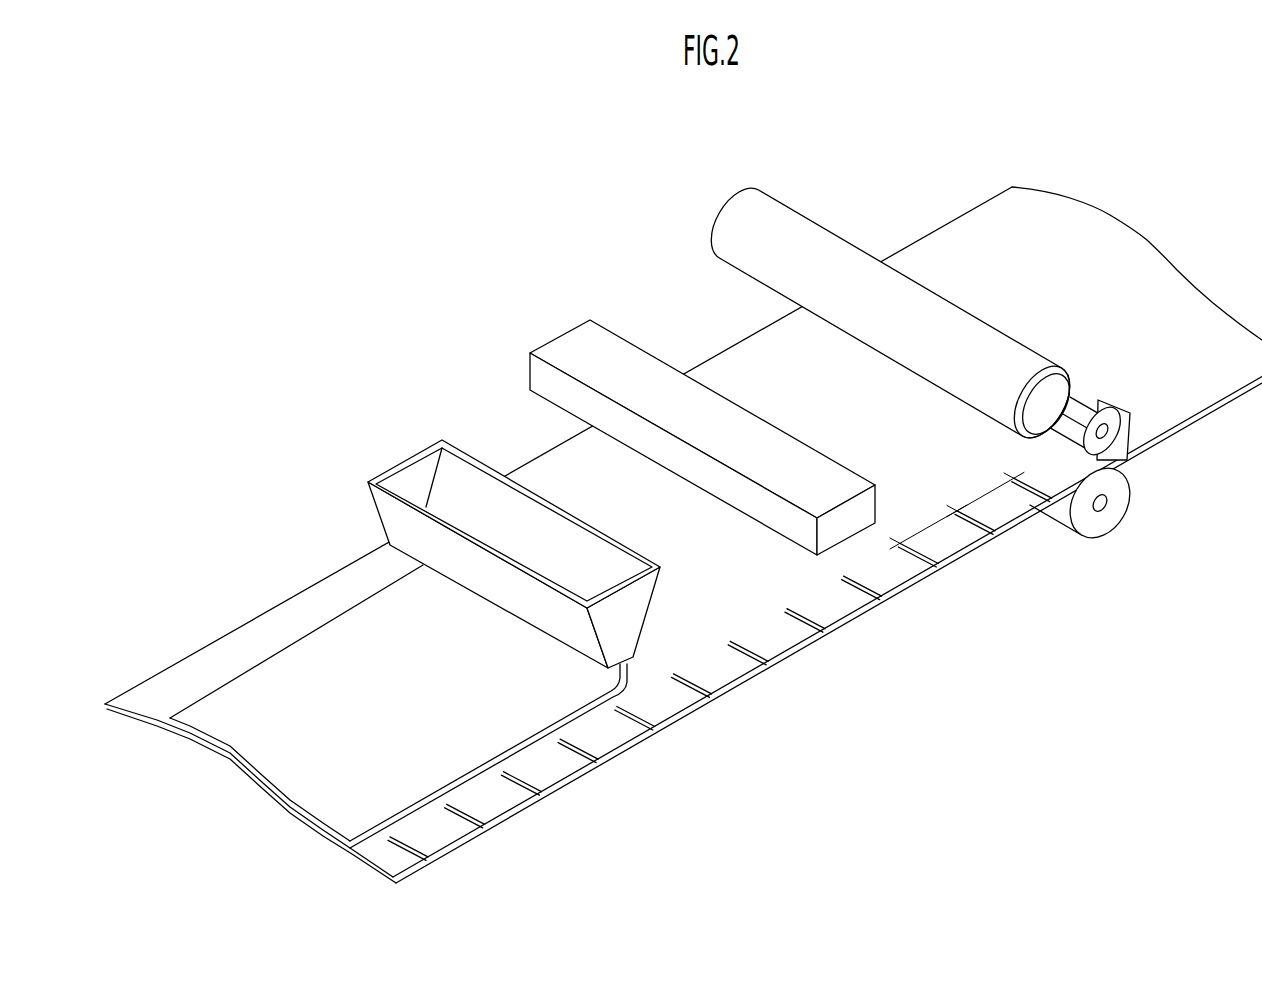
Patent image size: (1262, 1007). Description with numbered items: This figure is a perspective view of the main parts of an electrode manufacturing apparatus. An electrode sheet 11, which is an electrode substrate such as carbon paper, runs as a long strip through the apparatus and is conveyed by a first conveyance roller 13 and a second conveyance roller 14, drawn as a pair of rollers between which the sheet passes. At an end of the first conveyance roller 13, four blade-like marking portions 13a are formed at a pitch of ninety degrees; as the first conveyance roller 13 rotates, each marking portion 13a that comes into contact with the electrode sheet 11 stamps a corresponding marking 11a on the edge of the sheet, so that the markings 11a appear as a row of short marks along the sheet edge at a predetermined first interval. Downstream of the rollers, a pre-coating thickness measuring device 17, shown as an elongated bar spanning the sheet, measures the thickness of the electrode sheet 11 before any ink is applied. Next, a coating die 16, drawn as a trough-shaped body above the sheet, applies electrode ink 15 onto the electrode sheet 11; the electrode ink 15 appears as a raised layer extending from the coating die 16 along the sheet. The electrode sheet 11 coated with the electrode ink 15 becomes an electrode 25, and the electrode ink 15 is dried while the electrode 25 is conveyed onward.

The electrode sheet 11 is at (303, 605).
The marking 11a is at (1018, 489).
The first conveyance roller 13 is at (993, 333).
The marking portion 13a is at (1095, 390).
The second conveyance roller 14 is at (1089, 533).
The electrode ink 15 is at (347, 640).
The coating die 16 is at (418, 470).
The pre-coating thickness measuring device 17 is at (627, 357).
The electrode 25 is at (252, 570).